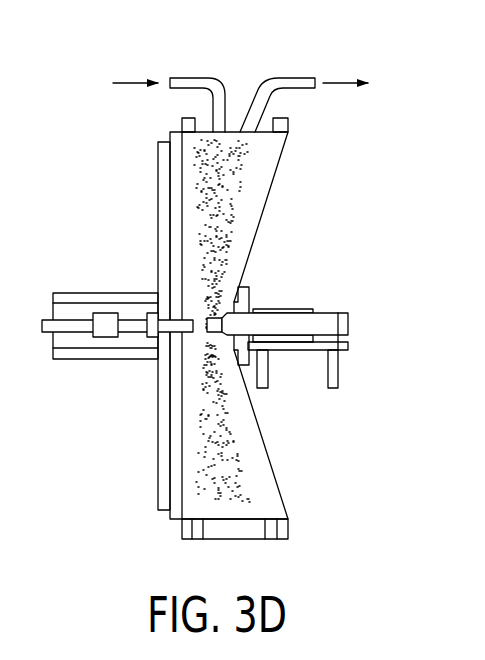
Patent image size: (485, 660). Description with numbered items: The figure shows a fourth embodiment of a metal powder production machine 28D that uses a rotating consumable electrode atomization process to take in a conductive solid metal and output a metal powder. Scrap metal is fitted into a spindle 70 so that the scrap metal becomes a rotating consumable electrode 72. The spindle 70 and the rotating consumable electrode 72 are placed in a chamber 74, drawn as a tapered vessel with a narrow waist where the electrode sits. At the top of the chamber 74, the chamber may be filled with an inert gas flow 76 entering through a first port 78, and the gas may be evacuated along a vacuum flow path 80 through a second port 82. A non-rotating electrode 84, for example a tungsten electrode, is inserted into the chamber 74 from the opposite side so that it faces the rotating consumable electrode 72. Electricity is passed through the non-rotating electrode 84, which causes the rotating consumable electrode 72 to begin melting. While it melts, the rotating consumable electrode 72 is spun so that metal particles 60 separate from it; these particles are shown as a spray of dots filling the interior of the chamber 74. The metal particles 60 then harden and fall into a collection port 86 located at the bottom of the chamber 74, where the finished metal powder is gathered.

The metal powder production machine 28D is at (85, 132).
The metal particles 60 is at (215, 475).
The spindle 70 is at (287, 309).
The rotating consumable electrode 72 is at (210, 296).
The chamber 74 is at (273, 178).
The inert gas flow 76 is at (135, 82).
The first port 78 is at (190, 78).
The vacuum flow path 80 is at (338, 82).
The second port 82 is at (285, 78).
The non-rotating electrode 84 is at (193, 333).
The collection port 86 is at (238, 539).